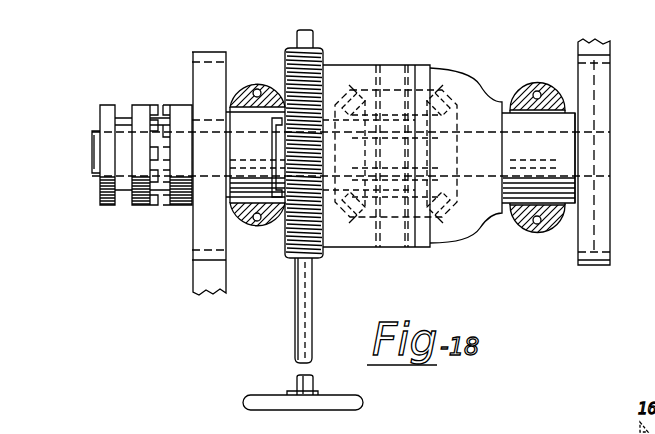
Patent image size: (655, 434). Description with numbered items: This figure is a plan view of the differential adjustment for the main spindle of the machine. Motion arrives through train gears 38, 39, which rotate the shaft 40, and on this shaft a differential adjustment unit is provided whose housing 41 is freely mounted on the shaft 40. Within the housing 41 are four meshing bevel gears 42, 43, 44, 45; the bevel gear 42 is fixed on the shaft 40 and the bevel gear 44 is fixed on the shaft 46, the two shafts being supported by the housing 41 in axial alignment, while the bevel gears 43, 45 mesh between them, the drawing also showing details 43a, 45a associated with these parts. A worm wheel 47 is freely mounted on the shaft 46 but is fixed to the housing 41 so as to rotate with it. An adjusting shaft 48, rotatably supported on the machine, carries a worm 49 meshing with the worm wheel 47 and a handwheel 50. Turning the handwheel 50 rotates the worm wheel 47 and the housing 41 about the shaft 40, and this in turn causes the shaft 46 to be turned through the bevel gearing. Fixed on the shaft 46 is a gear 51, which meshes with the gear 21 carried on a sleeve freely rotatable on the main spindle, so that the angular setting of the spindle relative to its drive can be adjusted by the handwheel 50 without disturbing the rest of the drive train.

The gear 21 is at (226, 290).
The train gear 38 is at (610, 47).
The train gear 39 is at (610, 78).
The shaft 40 is at (588, 178).
The housing 41 is at (452, 230).
The bevel gear 42 is at (454, 180).
The bevel gear 43 is at (392, 112).
The pin head 43a is at (378, 85).
The bevel gear 44 is at (316, 197).
The bevel gear 45 is at (395, 230).
The housing slot 45a is at (385, 248).
The shaft 46 is at (92, 160).
The worm wheel 47 is at (288, 250).
The adjusting shaft 48 is at (312, 345).
The worm 49 is at (272, 149).
The handwheel 50 is at (362, 403).
The gear 51 is at (192, 241).